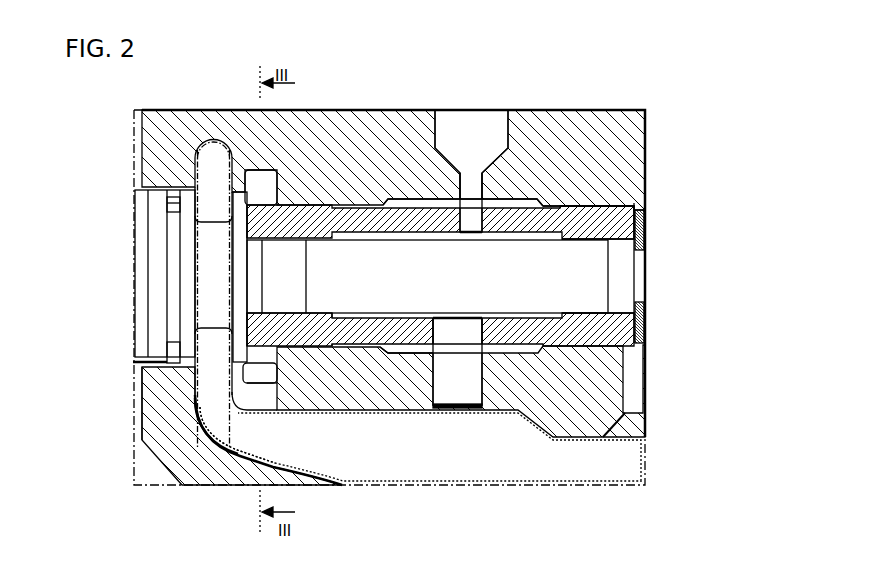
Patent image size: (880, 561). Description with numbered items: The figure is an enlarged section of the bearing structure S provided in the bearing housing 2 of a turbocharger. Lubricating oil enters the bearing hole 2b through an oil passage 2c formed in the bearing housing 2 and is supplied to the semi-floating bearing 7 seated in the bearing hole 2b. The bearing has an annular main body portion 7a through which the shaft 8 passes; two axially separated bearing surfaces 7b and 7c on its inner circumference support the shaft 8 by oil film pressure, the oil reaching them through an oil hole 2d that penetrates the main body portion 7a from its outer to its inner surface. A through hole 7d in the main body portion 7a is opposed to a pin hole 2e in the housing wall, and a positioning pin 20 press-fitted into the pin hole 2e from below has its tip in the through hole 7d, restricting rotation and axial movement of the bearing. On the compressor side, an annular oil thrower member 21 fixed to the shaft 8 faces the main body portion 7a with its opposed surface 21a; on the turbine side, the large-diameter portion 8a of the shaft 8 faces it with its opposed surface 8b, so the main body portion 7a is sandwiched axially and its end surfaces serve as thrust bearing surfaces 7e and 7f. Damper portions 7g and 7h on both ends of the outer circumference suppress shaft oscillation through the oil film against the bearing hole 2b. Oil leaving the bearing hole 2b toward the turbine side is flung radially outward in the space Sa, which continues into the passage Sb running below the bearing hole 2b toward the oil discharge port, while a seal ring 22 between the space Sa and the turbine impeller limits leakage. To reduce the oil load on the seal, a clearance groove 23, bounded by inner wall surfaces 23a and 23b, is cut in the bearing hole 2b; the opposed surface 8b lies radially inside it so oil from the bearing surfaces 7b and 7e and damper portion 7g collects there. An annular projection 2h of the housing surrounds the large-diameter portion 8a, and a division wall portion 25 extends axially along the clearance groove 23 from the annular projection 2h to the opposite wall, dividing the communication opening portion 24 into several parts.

The bearing housing 2 is at (605, 130).
The bearing hole 2b is at (645, 350).
The oil passage 2c is at (505, 128).
The oil hole 2d is at (482, 222).
The pin hole 2e is at (440, 400).
The annular projection 2h is at (230, 197).
The semi-floating bearing 7 is at (392, 306).
The main body portion 7a is at (409, 206).
The bearing surface 7b is at (386, 353).
The bearing surface 7c is at (602, 246).
The through hole 7d is at (481, 336).
The bearing surface 7e is at (246, 228).
The bearing surface 7f is at (641, 211).
The damper portion 7g is at (336, 350).
The damper portion 7h is at (600, 204).
The shaft 8 is at (332, 282).
The large-diameter portion 8a is at (244, 310).
The opposed surface 8b is at (250, 277).
The positioning pin 20 is at (462, 397).
The oil thrower member 21 is at (682, 276).
The opposed surface 21a is at (623, 297).
The seal ring 22 is at (135, 362).
The clearance groove 23 is at (203, 306).
The inner wall surface 23a is at (255, 383).
The inner wall surface 23b is at (278, 385).
The communication opening portion 24 is at (229, 402).
The division wall portion 25 is at (140, 407).
The bearing structure S is at (213, 99).
The space Sa is at (208, 428).
The passage Sb is at (247, 438).